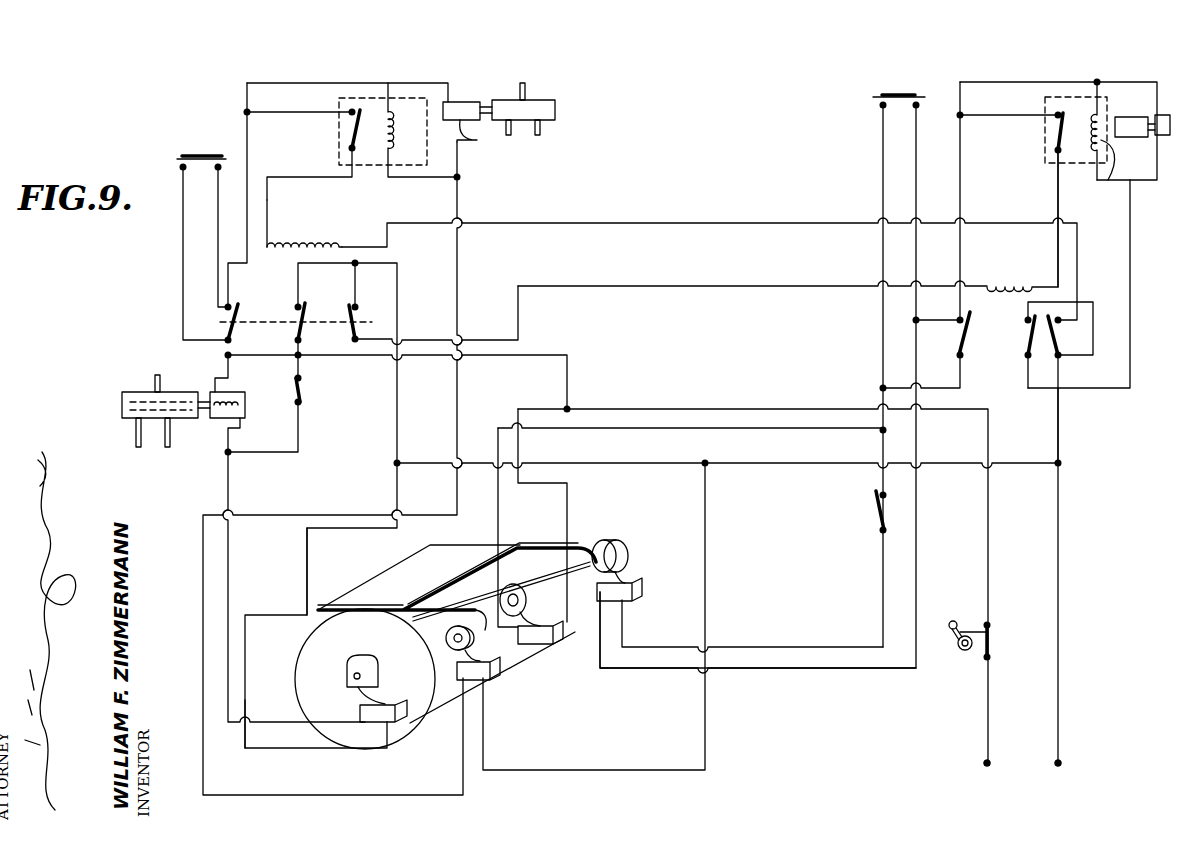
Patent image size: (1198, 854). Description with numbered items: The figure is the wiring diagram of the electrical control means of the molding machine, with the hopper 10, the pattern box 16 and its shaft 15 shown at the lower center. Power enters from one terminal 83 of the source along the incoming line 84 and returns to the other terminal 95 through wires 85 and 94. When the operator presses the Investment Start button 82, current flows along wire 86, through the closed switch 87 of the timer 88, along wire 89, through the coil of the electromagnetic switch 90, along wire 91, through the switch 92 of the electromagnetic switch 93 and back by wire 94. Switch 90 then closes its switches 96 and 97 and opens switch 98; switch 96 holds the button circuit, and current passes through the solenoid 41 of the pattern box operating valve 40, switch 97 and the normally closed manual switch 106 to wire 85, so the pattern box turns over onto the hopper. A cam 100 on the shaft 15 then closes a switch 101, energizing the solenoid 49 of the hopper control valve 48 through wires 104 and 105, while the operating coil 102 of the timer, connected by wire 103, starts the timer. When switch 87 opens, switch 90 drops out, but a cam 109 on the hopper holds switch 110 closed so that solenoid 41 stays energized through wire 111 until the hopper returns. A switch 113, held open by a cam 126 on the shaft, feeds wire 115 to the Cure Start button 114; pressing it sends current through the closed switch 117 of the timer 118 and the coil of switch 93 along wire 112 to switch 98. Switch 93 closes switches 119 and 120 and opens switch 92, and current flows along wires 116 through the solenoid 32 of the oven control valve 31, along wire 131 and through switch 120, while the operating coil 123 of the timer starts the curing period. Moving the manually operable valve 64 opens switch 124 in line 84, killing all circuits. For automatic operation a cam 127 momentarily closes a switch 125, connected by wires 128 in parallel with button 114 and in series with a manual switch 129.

The hopper 10 is at (336, 667).
The shaft 15 is at (568, 578).
The pattern box 16 is at (457, 633).
The oven control valve 31 is at (1138, 121).
The solenoid 32 is at (1160, 137).
The pattern box operating valve 40 is at (200, 393).
The solenoid 41 is at (222, 420).
The hopper control valve 48 is at (530, 100).
The solenoid 49 is at (478, 140).
The manually operable valve 64 is at (960, 653).
The Investment Start button 82 is at (203, 142).
The terminal 83 is at (989, 762).
The wire 84 is at (178, 243).
The wire 85 is at (398, 288).
The wire 86 is at (244, 240).
The switch 87 is at (346, 126).
The timer 88 is at (390, 128).
The wire 89 is at (270, 224).
The electromagnetic switch 90 is at (322, 244).
The wire 91 is at (640, 222).
The switch 92 is at (1052, 349).
The electromagnetic switch 93 is at (997, 289).
The wire 94 is at (1062, 446).
The terminal 95 is at (1056, 762).
The switch 96 is at (241, 309).
The switch 97 is at (310, 305).
The switch 98 is at (358, 306).
The cam 100 is at (478, 644).
The switch 101 is at (500, 679).
The operating coil 102 is at (378, 142).
The wire 103 is at (418, 174).
The wire 104 is at (333, 86).
The wire 105 is at (458, 271).
The normally closed switch 106 is at (306, 399).
The cam 109 is at (372, 661).
The switch 110 is at (400, 726).
The wire 111 is at (338, 529).
The wire 112 is at (702, 285).
The switch 113 is at (556, 646).
The Cure Start button 114 is at (908, 93).
The wire 115 is at (738, 430).
The wires 116 is at (878, 162).
The switch 117 is at (1051, 140).
The timer 118 is at (1100, 106).
The switch 119 is at (968, 323).
The switch 120 is at (1022, 343).
The operating coil 123 is at (1107, 167).
The switch 124 is at (988, 641).
The switch 125 is at (643, 589).
The cam 126 is at (514, 593).
The cam 127 is at (628, 555).
The wires 128 is at (807, 667).
The manually operable switch 129 is at (876, 521).
The wire 131 is at (1126, 245).